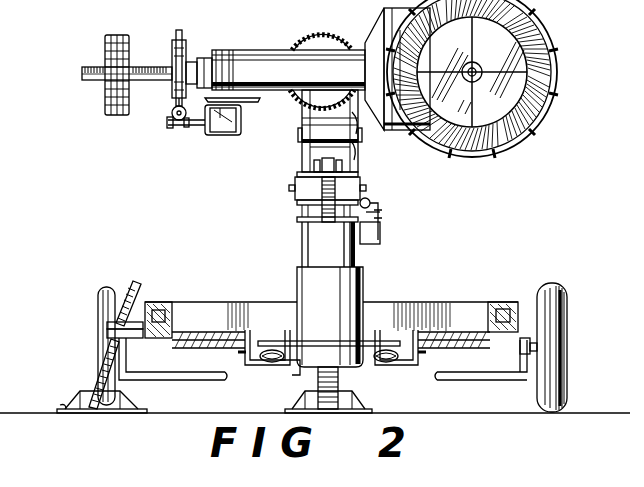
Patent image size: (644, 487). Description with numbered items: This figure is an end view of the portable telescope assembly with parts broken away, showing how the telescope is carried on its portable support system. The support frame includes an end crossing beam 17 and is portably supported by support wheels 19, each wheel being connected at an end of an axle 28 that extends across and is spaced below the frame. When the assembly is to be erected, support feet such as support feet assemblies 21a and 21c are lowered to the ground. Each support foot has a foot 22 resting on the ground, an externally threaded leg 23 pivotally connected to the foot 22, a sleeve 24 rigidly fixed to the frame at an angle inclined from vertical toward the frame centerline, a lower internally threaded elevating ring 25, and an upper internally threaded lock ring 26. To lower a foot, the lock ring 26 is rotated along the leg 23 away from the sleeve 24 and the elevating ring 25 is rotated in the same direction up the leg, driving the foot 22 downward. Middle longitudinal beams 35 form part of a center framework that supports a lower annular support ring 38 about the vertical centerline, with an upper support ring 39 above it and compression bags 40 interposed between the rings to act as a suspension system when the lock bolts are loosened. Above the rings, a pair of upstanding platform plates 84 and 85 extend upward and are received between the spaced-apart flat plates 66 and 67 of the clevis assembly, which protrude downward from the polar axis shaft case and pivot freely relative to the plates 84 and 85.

The end crossing beam 17 is at (446, 302).
The support wheels 19 is at (110, 284).
The support foot assembly 21a is at (136, 410).
The support foot assembly 21c is at (366, 408).
The foot 22 is at (62, 407).
The externally threaded leg 23 is at (97, 384).
The sleeve 24 is at (106, 321).
The lower internally threaded elevating ring 25 is at (106, 336).
The upper internally threaded lock ring 26 is at (136, 312).
The axle 28 is at (202, 380).
The middle longitudinal beams 35 is at (248, 368).
The lower annular support ring 38 is at (296, 375).
The upper support ring 39 is at (290, 320).
The compression bags 40 is at (266, 362).
The flat plate 66 is at (301, 114).
The flat plate 67 is at (352, 118).
The upstanding platform plate 84 is at (303, 144).
The upstanding platform plate 85 is at (352, 146).